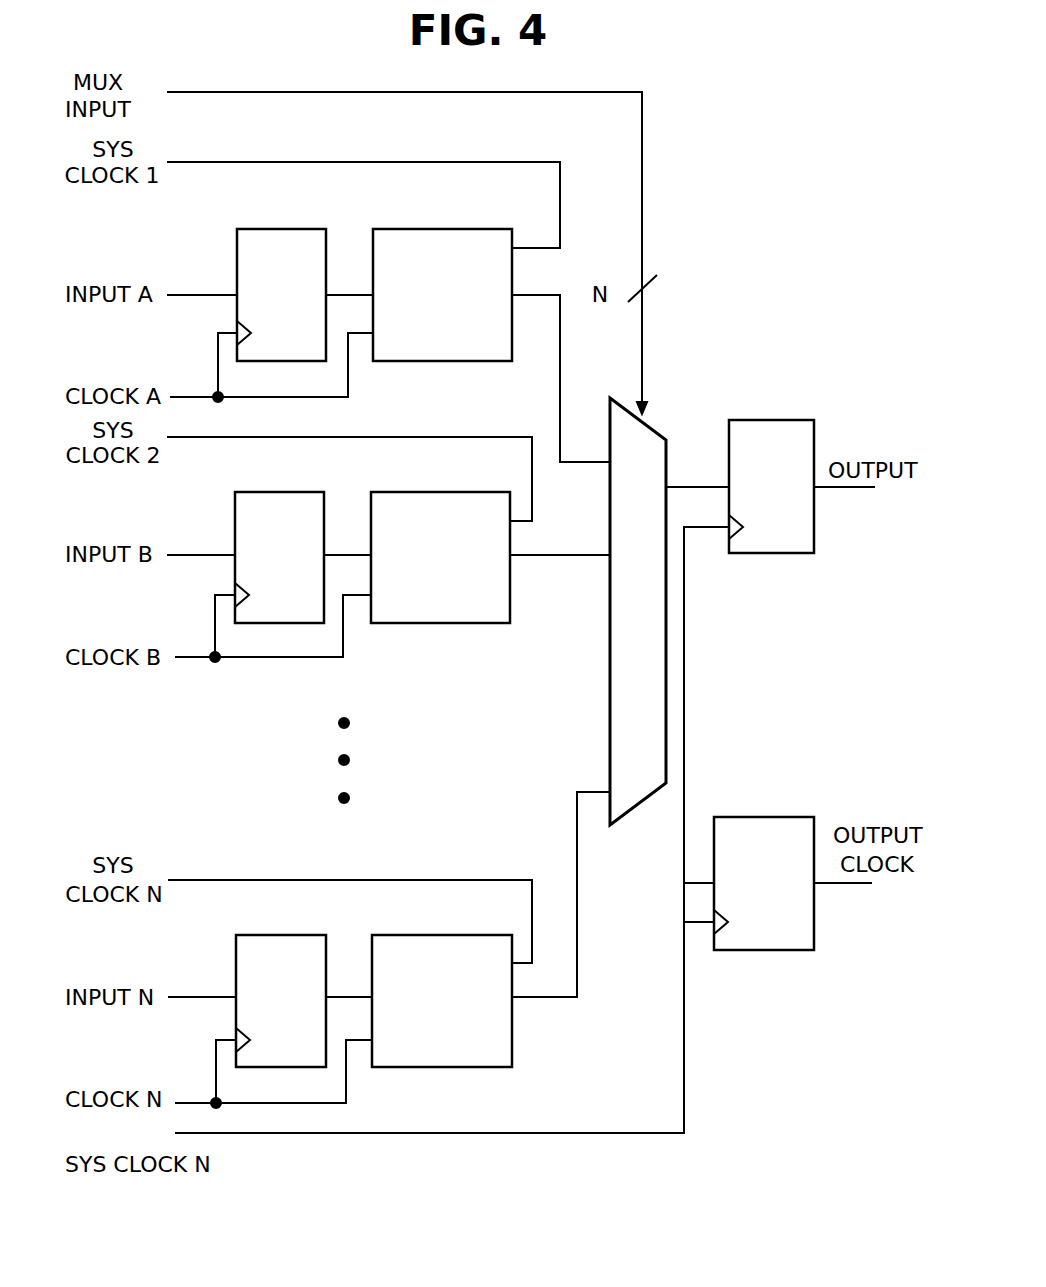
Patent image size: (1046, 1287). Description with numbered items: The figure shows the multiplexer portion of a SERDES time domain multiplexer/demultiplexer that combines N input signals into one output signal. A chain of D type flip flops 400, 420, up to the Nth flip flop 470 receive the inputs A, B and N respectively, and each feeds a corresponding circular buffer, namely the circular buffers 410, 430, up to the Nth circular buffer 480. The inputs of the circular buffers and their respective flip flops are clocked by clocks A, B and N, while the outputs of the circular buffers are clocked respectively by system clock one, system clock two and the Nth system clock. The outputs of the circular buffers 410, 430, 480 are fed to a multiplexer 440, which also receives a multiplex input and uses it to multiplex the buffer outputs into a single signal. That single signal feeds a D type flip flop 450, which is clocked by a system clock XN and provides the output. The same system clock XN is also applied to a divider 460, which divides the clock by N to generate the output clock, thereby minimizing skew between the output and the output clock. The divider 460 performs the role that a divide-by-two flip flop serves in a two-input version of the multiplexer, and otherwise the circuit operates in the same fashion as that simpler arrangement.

The D type flip flop 400 is at (285, 228).
The circular buffer 410 is at (438, 228).
The D type flip flop 420 is at (282, 491).
The circular buffer 430 is at (437, 491).
The multiplexer 440 is at (660, 432).
The D type flip flop 450 is at (773, 420).
The divider 460 is at (773, 817).
The Nth flip flop 470 is at (283, 934).
The Nth circular buffer 480 is at (437, 934).